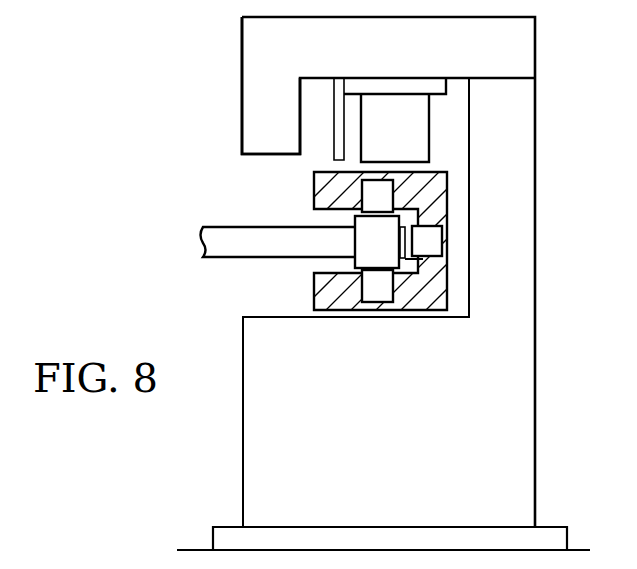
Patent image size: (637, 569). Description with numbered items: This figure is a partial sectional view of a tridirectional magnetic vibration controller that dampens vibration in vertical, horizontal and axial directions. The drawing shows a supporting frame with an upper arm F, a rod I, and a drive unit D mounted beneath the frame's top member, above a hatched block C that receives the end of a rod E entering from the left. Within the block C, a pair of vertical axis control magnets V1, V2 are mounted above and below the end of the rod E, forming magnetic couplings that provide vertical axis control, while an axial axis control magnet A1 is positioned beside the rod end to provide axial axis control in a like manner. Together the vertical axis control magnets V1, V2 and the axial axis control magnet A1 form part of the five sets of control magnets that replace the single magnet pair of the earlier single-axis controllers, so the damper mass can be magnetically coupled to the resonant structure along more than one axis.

The frame arm F is at (271, 85).
The rod I is at (330, 121).
The drive unit D is at (395, 120).
The cylinder block C is at (370, 241).
The piston rod E is at (278, 242).
The vertical axis control magnet V1 is at (377, 196).
The vertical axis control magnet V2 is at (377, 286).
The axial axis control magnet A1 is at (423, 242).